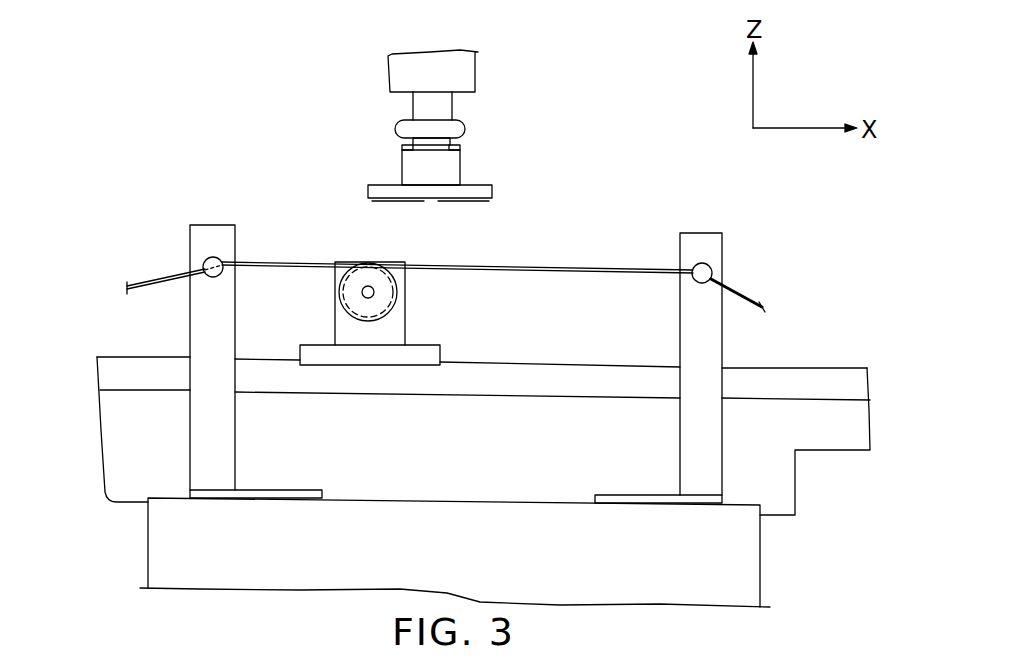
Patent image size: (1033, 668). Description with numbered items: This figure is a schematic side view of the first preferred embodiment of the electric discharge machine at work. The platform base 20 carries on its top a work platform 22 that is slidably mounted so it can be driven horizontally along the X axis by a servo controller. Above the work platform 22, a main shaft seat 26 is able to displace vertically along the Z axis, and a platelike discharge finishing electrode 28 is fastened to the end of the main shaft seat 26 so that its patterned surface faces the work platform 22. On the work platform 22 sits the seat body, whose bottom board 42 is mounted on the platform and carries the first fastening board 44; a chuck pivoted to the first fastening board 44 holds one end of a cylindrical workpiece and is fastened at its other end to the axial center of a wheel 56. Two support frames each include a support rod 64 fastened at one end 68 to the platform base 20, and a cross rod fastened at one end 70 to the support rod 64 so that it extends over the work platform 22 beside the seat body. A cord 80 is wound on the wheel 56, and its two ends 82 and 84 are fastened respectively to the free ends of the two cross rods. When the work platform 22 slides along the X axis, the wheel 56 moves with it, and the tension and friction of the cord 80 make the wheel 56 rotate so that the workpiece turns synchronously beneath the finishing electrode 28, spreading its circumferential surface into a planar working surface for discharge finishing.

The platform base 20 is at (742, 530).
The work platform 22 is at (775, 378).
The main shaft seat 26 is at (463, 72).
The discharge finishing electrode 28 is at (470, 192).
The bottom board 42 is at (435, 353).
The first fastening board 44 is at (388, 325).
The wheel 56 is at (398, 293).
The support rod 64 is at (218, 427).
The end of support rod 68 is at (218, 490).
The end of cross rod 70 is at (207, 276).
The cord 80 is at (563, 265).
The end of cord 82 is at (740, 292).
The end of cord 84 is at (153, 280).